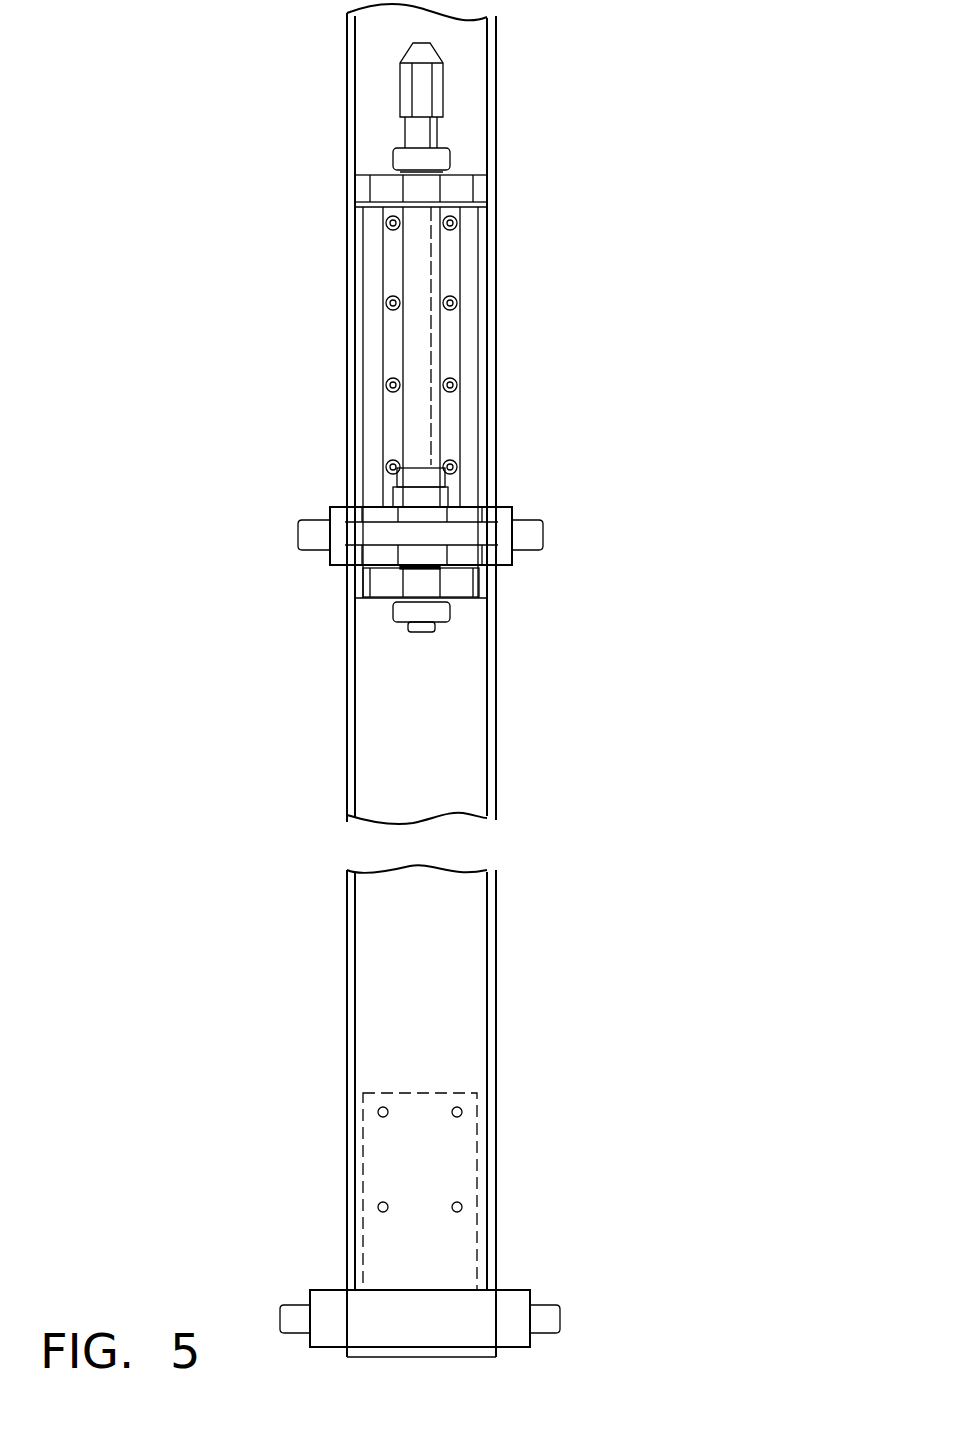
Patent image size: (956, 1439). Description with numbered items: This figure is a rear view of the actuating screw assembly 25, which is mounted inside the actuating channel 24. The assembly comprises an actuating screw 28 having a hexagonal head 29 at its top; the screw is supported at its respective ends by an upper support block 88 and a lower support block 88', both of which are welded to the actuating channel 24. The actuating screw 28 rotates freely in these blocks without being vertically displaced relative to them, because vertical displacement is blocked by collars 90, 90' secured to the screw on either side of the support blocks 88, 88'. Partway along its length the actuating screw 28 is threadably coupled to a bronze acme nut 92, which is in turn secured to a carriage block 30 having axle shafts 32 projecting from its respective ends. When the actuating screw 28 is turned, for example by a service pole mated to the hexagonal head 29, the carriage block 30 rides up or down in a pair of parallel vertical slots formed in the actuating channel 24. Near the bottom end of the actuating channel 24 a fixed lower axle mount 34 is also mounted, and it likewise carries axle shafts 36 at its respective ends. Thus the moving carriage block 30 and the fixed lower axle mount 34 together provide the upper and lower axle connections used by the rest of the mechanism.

The actuating channel 24 is at (497, 905).
The actuating screw assembly 25 is at (552, 219).
The actuating screw 28 is at (423, 273).
The hexagonal head 29 is at (422, 52).
The carriage block 30 is at (510, 501).
The axle shafts 32 is at (308, 534).
The lower axle mount 34 is at (519, 1280).
The axle shafts 36 is at (292, 1310).
The upper support block 88 is at (466, 176).
The lower support block 88' is at (468, 590).
The collar 90 is at (476, 138).
The collar 90' is at (476, 625).
The bronze acme nut 92 is at (405, 493).